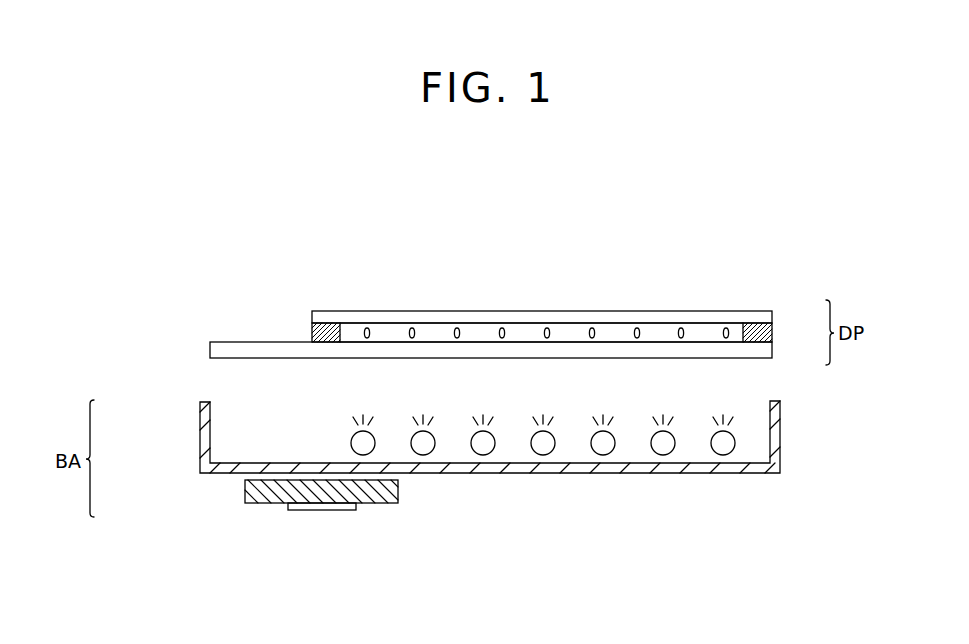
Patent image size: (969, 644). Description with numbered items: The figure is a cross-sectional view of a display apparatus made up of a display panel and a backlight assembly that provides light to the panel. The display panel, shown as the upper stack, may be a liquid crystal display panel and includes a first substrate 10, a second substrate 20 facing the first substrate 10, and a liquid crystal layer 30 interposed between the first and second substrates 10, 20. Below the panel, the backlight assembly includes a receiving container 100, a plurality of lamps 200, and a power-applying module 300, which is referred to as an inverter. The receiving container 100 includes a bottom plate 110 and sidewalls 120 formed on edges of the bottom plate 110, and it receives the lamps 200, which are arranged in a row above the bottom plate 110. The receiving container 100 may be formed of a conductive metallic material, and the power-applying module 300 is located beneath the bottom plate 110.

The first substrate 10 is at (772, 350).
The second substrate 20 is at (772, 318).
The liquid crystal layer 30 is at (735, 333).
The receiving container 100 is at (141, 423).
The bottom plate 110 is at (231, 475).
The sidewalls 120 is at (203, 431).
The lamps 200 is at (343, 440).
The power-applying module 300 is at (260, 504).